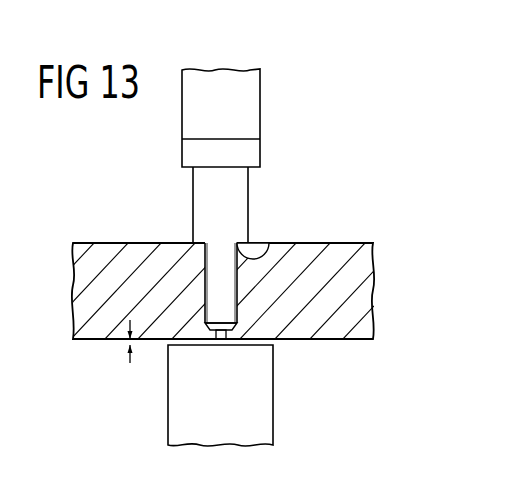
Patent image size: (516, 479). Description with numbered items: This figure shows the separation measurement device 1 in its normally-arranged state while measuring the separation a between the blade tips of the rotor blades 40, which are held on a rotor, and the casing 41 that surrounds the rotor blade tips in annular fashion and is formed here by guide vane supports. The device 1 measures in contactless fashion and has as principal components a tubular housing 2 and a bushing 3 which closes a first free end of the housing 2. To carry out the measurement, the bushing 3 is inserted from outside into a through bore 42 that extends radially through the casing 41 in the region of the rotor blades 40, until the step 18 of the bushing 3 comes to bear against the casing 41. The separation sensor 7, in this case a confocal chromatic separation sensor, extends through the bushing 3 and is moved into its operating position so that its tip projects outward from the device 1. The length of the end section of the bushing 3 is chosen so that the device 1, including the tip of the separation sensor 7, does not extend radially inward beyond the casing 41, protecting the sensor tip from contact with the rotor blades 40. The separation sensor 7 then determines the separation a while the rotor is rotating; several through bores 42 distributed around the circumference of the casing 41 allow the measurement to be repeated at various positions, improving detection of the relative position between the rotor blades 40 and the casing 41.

The separation measurement device 1 is at (270, 196).
The tubular housing 2 is at (248, 108).
The bushing 3 is at (240, 202).
The step 18 is at (275, 247).
The casing 41 is at (221, 274).
The separation sensor 7 is at (228, 382).
The through bore 42 is at (209, 333).
The rotor blades 40 is at (258, 405).
The separation a is at (130, 343).